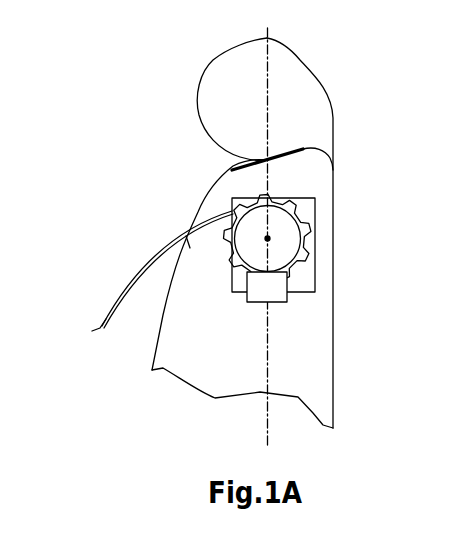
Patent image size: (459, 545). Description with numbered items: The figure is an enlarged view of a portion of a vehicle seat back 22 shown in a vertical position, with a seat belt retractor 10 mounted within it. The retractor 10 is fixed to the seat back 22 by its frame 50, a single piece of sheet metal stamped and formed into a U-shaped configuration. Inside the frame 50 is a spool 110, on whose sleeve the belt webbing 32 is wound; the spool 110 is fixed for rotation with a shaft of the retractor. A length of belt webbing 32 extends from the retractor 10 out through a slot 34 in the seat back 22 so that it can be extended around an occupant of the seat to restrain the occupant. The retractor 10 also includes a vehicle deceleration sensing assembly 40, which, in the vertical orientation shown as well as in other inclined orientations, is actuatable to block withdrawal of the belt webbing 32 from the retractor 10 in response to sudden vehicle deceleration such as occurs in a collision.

The retractor 10 is at (200, 177).
The seat back 22 is at (333, 162).
The slot 34 is at (195, 223).
The belt webbing 32 is at (121, 287).
The frame 50 is at (230, 225).
The spool 110 is at (273, 198).
The vehicle deceleration sensing assembly 40 is at (268, 302).